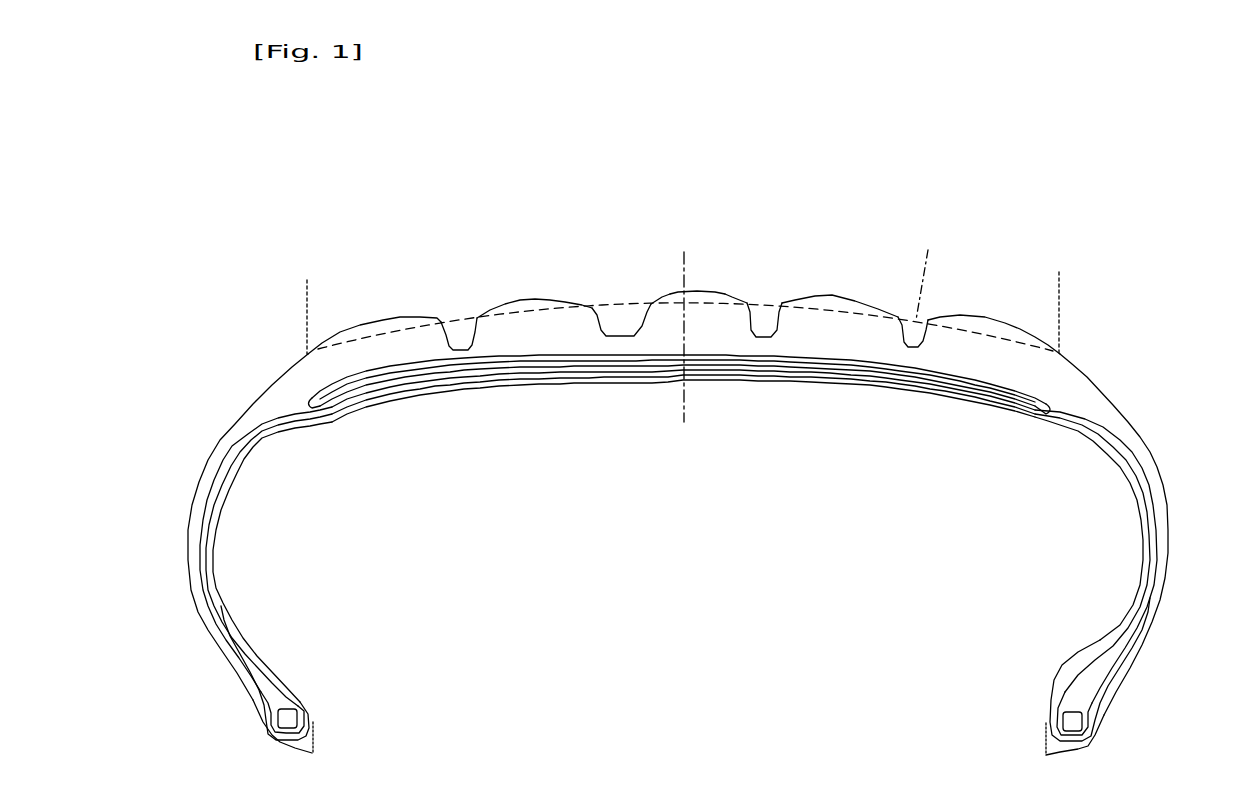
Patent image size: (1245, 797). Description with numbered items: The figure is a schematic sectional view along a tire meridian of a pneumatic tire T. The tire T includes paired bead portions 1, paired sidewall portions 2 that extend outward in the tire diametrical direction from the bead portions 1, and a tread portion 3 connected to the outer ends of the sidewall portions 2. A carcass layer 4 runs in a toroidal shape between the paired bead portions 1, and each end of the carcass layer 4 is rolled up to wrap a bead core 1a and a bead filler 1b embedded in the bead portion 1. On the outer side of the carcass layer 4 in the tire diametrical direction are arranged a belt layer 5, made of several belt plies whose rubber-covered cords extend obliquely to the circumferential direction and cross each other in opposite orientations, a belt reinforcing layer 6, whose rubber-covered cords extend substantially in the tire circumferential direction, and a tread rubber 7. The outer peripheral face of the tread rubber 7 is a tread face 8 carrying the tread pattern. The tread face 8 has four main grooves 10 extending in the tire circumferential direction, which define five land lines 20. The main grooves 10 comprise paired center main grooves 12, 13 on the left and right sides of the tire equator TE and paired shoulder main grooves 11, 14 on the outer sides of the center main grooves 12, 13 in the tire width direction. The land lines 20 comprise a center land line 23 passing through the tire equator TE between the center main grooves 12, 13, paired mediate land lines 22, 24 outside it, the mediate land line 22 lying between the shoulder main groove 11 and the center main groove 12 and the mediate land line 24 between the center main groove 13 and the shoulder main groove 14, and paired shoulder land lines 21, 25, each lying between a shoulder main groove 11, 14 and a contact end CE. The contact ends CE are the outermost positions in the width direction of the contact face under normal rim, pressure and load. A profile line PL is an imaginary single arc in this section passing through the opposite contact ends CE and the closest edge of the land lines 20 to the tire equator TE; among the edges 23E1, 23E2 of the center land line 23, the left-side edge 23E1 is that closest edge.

The pneumatic tire T is at (203, 296).
The bead portion 1 is at (689, 685).
The bead core 1a is at (308, 720).
The bead filler 1b is at (288, 693).
The sidewall portion 2 is at (170, 577).
The tread portion 3 is at (421, 296).
The carcass layer 4 is at (1147, 476).
The belt layer 5 is at (928, 352).
The belt reinforcing layer 6 is at (1047, 400).
The tread rubber 7 is at (521, 344).
The tread face 8 is at (863, 304).
The main grooves 10 is at (662, 385).
The shoulder main groove 11 is at (455, 350).
The center main groove 12 is at (613, 347).
The center main groove 13 is at (751, 338).
The shoulder main groove 14 is at (880, 344).
The land lines 20 is at (684, 260).
The shoulder land line 21 is at (362, 312).
The mediate land line 22 is at (524, 296).
The center land line 23 is at (702, 235).
The edge of center land line 23E1 is at (660, 302).
The edge of center land line 23E2 is at (749, 300).
The mediate land line 24 is at (840, 246).
The shoulder land line 25 is at (998, 318).
The contact end CE is at (684, 301).
The tire equator TE is at (683, 324).
The profile line PL is at (931, 273).